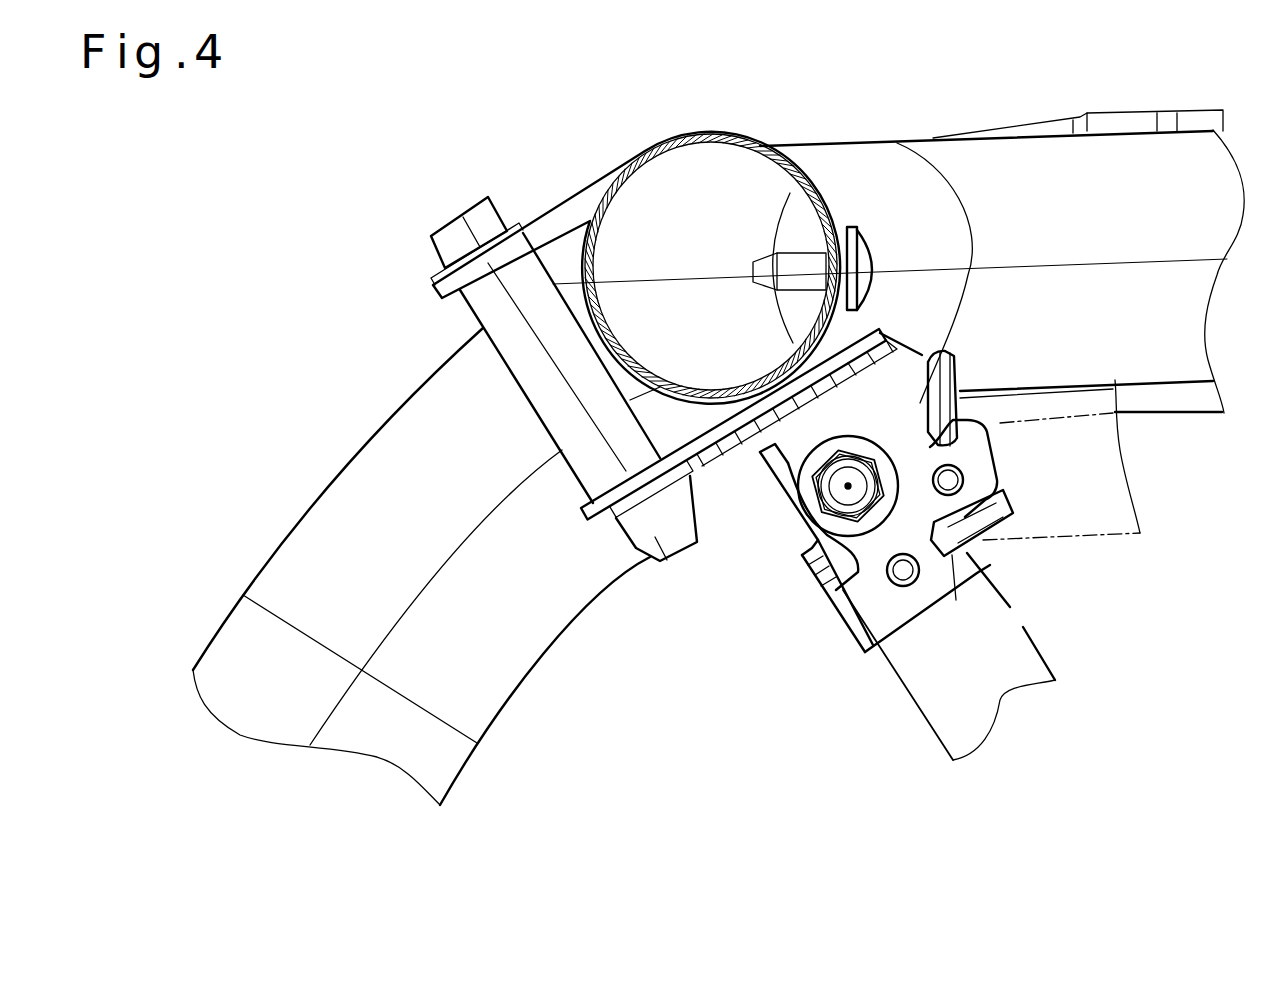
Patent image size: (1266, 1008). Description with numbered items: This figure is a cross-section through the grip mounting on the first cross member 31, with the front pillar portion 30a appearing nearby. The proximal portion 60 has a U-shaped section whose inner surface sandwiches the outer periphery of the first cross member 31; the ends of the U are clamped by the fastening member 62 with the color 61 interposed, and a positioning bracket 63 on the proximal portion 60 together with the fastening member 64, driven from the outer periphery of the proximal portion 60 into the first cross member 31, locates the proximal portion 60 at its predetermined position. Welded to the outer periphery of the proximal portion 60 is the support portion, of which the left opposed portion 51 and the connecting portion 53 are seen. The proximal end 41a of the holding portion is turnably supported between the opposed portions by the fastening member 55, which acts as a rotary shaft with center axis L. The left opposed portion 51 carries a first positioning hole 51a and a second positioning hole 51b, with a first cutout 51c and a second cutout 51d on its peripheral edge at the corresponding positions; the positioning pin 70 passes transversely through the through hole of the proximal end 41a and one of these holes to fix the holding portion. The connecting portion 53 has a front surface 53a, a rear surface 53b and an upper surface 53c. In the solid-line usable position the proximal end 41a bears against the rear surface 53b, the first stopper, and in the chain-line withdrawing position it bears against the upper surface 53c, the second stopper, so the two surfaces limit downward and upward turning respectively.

The front pillar portion 30a is at (333, 503).
The first cross member 31 is at (592, 220).
The proximal portion 60 is at (650, 133).
The fastening member 64 is at (862, 246).
The fastening member 62 is at (458, 217).
The color (collar) 61 is at (473, 317).
The positioning bracket 63 is at (718, 467).
The connecting portion 53 is at (857, 566).
The front surface 53a is at (812, 585).
The rear surface 53b is at (822, 556).
The upper surface 53c is at (800, 556).
The fastening member 55 is at (836, 452).
The left opposed portion 51 is at (953, 551).
The first positioning hole 51a is at (915, 578).
The second positioning hole 51b is at (952, 467).
The first cutout 51c is at (955, 565).
The second cutout 51d is at (958, 402).
The positioning pin 70 is at (1012, 513).
The proximal end 41a is at (975, 558).